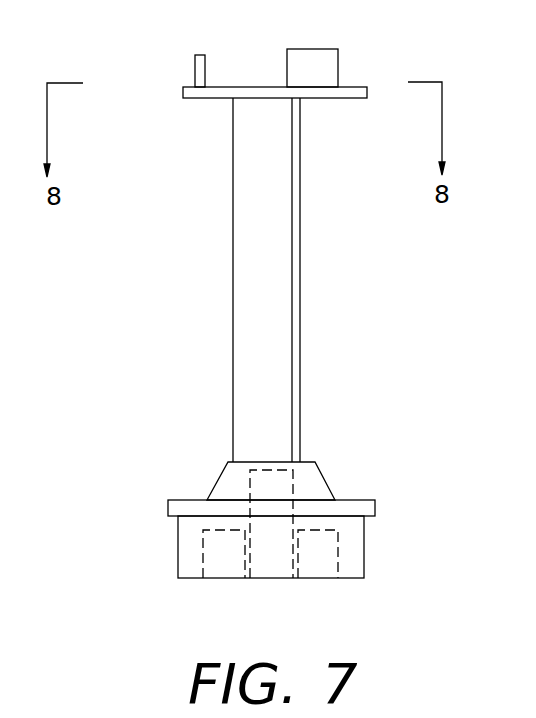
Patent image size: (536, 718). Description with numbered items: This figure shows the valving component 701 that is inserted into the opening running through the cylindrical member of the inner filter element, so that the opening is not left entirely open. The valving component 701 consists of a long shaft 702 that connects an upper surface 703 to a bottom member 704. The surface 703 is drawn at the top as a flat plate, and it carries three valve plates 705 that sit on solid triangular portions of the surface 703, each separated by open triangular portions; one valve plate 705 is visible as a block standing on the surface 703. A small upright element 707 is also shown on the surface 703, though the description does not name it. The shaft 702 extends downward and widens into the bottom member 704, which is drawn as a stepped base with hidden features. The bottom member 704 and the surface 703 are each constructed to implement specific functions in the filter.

The valving component 701 is at (233, 385).
The shaft 702 is at (300, 308).
The surface 703 is at (353, 87).
The bottom member 704 is at (365, 546).
The valve plate 705 is at (318, 49).
The pin 707 is at (183, 98).